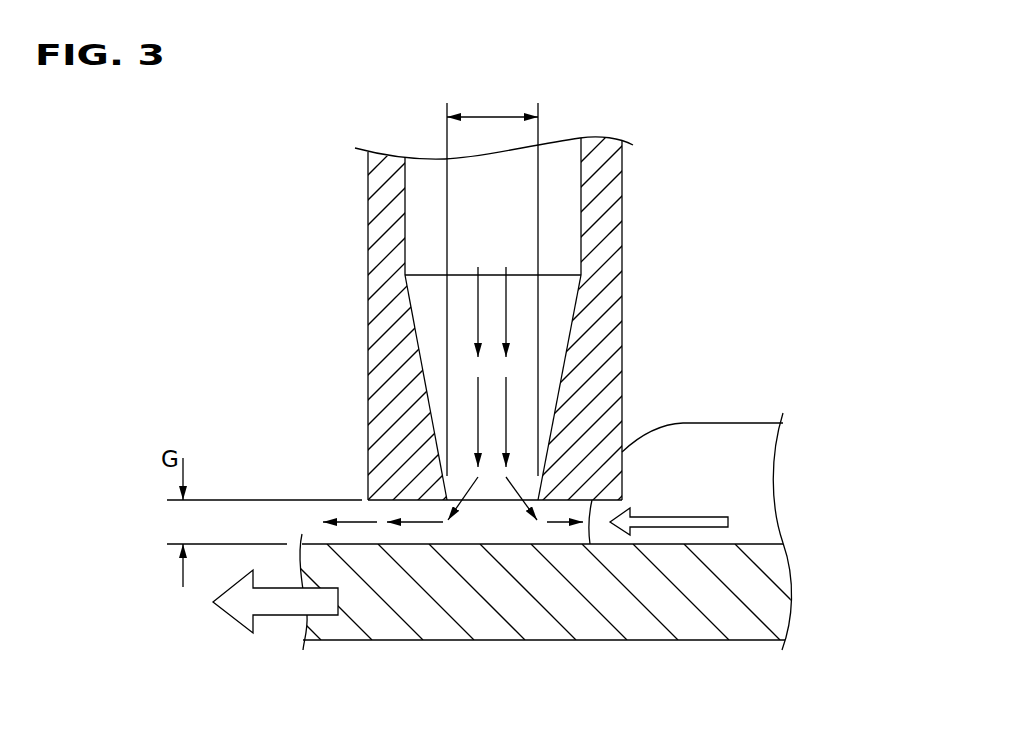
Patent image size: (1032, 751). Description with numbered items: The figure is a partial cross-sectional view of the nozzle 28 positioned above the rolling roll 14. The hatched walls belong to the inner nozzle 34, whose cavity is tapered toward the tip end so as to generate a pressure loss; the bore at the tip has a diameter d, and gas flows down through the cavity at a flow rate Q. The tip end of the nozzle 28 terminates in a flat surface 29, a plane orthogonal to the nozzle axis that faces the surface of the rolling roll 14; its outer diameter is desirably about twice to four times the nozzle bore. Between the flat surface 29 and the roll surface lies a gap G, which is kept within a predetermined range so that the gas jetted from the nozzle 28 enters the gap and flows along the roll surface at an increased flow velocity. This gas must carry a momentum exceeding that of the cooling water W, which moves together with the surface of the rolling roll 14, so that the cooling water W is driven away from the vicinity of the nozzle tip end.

The rolling roll 14 is at (540, 627).
The nozzle 28 is at (513, 298).
The flat surface 29 is at (406, 500).
The inner nozzle 34 is at (372, 270).
The cooling water W is at (705, 437).